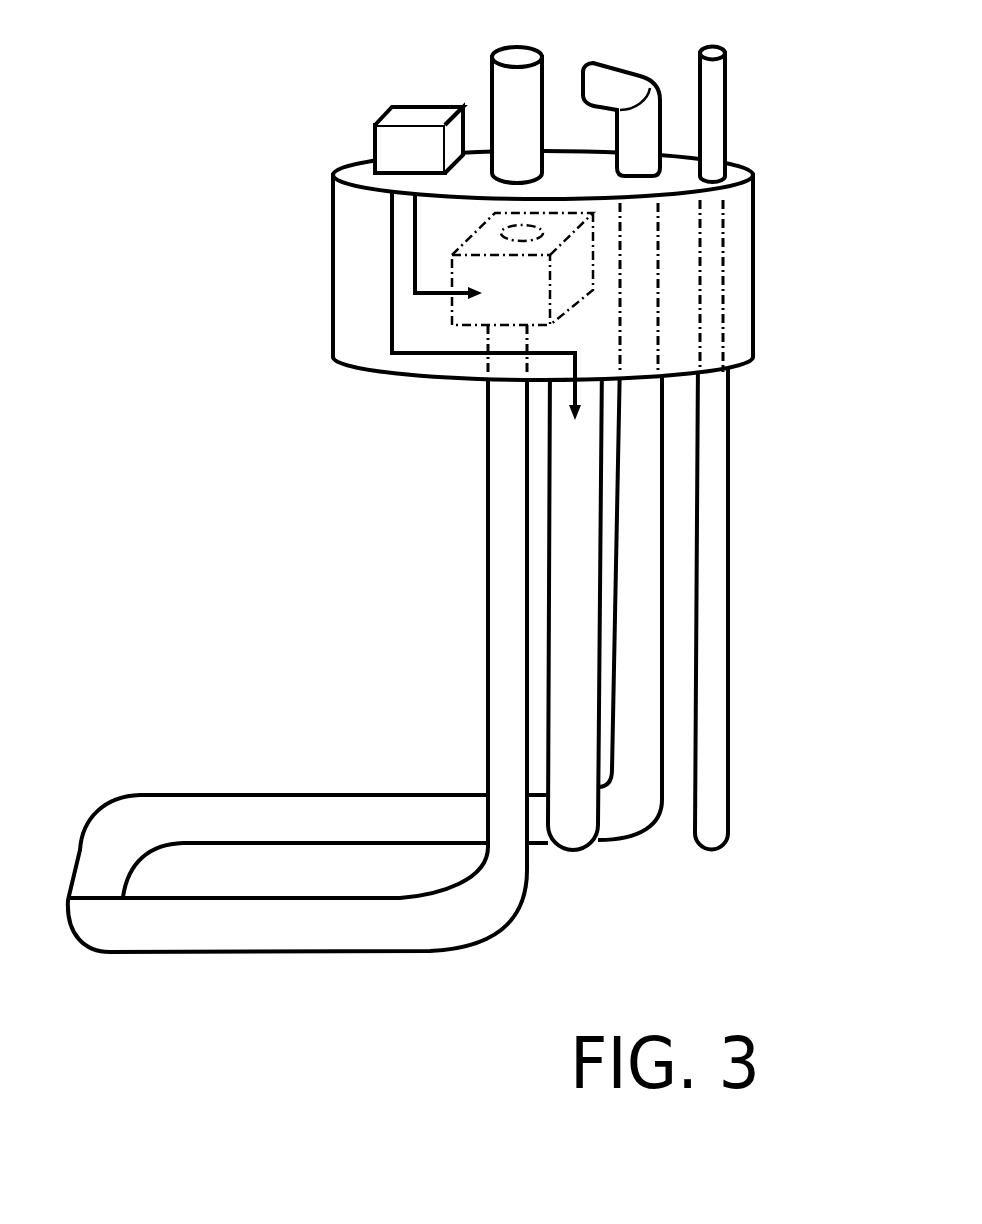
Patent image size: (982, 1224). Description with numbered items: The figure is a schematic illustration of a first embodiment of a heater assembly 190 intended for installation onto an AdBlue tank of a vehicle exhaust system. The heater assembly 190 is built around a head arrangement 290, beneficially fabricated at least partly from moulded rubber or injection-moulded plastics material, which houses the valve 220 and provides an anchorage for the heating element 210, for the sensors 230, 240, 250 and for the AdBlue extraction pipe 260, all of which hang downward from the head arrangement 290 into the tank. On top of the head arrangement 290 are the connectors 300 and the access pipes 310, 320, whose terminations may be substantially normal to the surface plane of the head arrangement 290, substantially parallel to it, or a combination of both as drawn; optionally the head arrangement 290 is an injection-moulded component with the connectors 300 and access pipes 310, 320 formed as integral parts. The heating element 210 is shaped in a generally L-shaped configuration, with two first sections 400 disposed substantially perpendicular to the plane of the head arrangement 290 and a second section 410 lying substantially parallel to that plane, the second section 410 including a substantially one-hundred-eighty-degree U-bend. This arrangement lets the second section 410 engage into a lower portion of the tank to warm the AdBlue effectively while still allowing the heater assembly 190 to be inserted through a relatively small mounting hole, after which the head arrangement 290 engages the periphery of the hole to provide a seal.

The heater assembly 190 is at (268, 217).
The heating element 210 is at (380, 717).
The valve 220 is at (463, 308).
The sensor 230 is at (578, 817).
The sensor 240 is at (630, 600).
The sensor 250 is at (297, 656).
The AdBlue extraction pipe 260 is at (717, 742).
The head arrangement 290 is at (347, 265).
The connectors 300 is at (415, 112).
The access pipe 310 is at (620, 85).
The access pipe 320 is at (710, 45).
The first sections 400 is at (505, 545).
The second section 410 is at (288, 810).